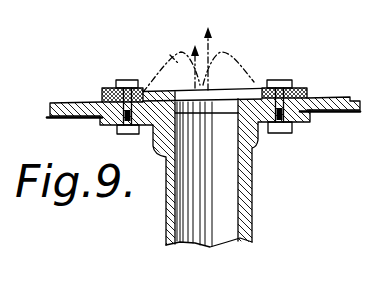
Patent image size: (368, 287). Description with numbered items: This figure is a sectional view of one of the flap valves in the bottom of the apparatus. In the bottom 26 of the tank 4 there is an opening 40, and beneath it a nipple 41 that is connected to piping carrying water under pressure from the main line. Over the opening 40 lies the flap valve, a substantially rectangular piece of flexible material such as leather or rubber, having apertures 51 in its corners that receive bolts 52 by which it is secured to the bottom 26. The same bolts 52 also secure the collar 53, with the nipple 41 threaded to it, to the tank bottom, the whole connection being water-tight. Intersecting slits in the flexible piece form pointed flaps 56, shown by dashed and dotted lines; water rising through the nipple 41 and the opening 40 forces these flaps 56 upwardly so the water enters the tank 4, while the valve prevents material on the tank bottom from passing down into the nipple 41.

The tank 4 is at (73, 118).
The bottom of the tank 26 is at (80, 100).
The opening 40 is at (229, 97).
The nipple 41 is at (255, 176).
The aperture 51 is at (308, 95).
The bolt 52 is at (128, 80).
The collar 53 is at (303, 121).
The pointed flap 56 is at (170, 55).